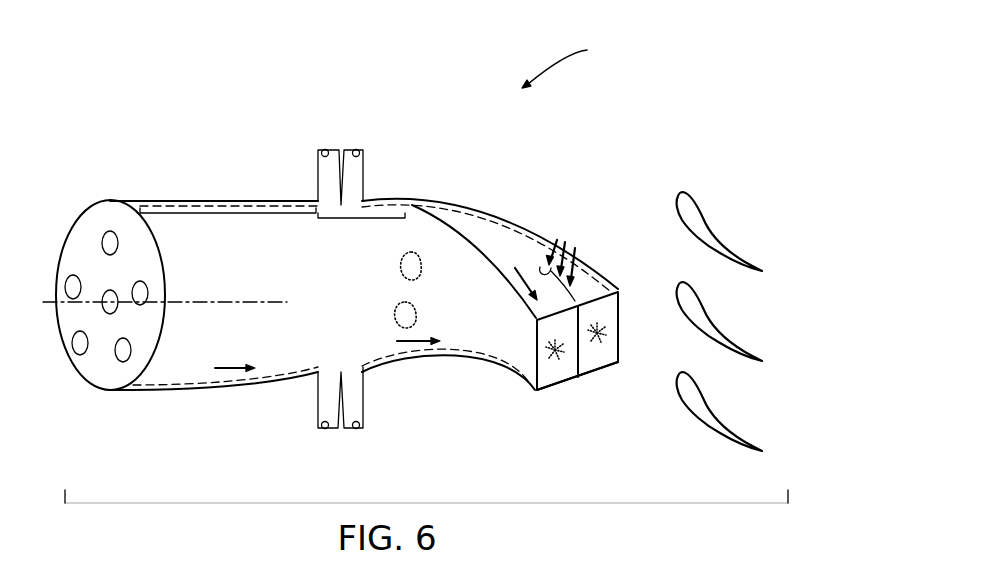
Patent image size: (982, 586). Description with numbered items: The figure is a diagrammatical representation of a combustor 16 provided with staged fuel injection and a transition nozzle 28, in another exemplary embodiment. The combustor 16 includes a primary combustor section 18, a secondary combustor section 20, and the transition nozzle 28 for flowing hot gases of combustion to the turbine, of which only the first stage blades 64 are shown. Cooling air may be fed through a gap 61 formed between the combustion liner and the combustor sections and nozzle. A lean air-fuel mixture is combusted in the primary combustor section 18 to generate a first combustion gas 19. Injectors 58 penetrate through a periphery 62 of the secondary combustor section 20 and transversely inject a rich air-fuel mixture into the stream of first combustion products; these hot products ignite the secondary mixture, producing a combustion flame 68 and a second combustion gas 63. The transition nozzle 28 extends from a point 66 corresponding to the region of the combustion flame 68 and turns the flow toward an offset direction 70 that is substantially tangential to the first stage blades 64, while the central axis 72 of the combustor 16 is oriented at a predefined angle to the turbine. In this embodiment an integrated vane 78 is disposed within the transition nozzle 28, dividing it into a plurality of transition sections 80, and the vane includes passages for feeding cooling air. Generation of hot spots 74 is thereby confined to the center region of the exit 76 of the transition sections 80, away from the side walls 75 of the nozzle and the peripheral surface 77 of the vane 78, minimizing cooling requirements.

The combustor 16 is at (567, 64).
The primary combustor section 18 is at (231, 214).
The first combustion gas 19 is at (222, 367).
The secondary combustor section 20 is at (343, 219).
The transition nozzle 28 is at (580, 246).
The injectors 58 is at (341, 150).
The gap 61 is at (210, 200).
The periphery 62 is at (380, 200).
The second combustion gas 63 is at (416, 356).
The first stage blades 64 is at (712, 316).
The point 66 is at (412, 206).
The combustion flame 68 is at (418, 313).
The offset direction 70 is at (514, 283).
The central axis 72 is at (222, 300).
The hot spot 74 is at (597, 342).
The side walls 75 is at (535, 362).
The exit 76 is at (555, 375).
The peripheral surface 77 is at (582, 312).
The integrated vane 78 is at (540, 267).
The transition sections 80 is at (590, 296).